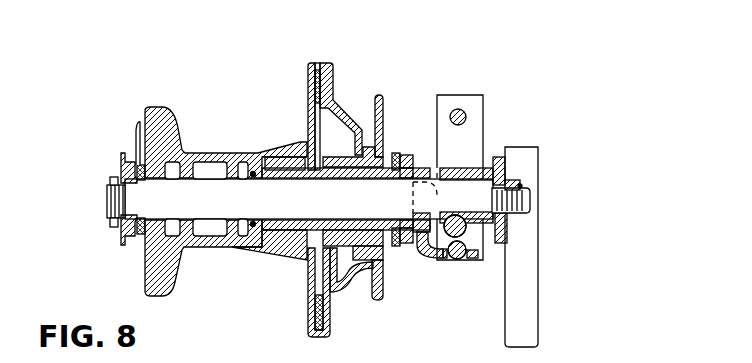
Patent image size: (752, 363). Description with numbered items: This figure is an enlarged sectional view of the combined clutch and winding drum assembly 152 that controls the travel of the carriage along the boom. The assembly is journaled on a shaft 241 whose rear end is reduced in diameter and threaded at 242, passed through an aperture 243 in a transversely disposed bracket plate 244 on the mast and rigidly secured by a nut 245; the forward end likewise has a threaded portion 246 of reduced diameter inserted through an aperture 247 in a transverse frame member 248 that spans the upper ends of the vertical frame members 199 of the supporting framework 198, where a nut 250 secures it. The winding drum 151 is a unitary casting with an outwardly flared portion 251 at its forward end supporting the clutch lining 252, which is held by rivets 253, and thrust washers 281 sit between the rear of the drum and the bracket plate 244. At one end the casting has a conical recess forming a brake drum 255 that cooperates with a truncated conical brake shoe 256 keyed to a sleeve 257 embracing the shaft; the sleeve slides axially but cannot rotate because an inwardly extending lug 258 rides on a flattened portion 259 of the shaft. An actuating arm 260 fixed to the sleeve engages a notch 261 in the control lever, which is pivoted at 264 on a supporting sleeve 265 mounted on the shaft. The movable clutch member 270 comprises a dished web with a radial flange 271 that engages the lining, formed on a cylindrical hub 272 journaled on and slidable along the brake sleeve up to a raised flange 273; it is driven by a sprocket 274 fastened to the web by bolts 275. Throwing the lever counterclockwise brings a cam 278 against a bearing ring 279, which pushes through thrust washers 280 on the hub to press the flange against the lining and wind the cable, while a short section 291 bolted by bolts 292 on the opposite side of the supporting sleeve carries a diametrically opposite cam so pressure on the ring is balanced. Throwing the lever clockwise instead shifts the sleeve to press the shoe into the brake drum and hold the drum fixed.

The winding drum 151 is at (190, 153).
The combined clutch and winding drum assembly 152 is at (290, 90).
The supporting framework 198 is at (543, 278).
The vertical frame member 199 is at (530, 243).
The shaft 241 is at (246, 206).
The threaded end portion 242 is at (110, 207).
The aperture 243 is at (137, 186).
The bracket plate 244 is at (128, 243).
The nut 245 is at (113, 177).
The threaded portion 246 is at (532, 198).
The aperture 247 is at (512, 180).
The frame member 248 is at (500, 157).
The nut 250 is at (522, 184).
The outwardly flared portion 251 is at (315, 64).
The clutch lining 252 is at (322, 63).
The rivet 253 is at (308, 84).
The brake drum 255 is at (285, 155).
The brake shoe 256 is at (277, 258).
The sleeve 257 is at (310, 178).
The lug 258 is at (421, 233).
The flattened portion 259 is at (416, 234).
The actuating arm 260 is at (447, 260).
The notch 261 is at (461, 257).
The pivot 264 is at (465, 213).
The supporting sleeve 265 is at (455, 168).
The movable clutch member 270 is at (355, 97).
The flange 271 is at (332, 82).
The hub 272 is at (345, 160).
The raised flange 273 is at (410, 163).
The sprocket 274 is at (382, 108).
The bolt 275 is at (387, 262).
The cam 278 is at (413, 200).
The bearing ring 279 is at (397, 153).
The thrust washer 280 is at (402, 170).
The thrust washer 281 is at (140, 163).
The short section 291 is at (478, 117).
The bolt 292 is at (462, 109).